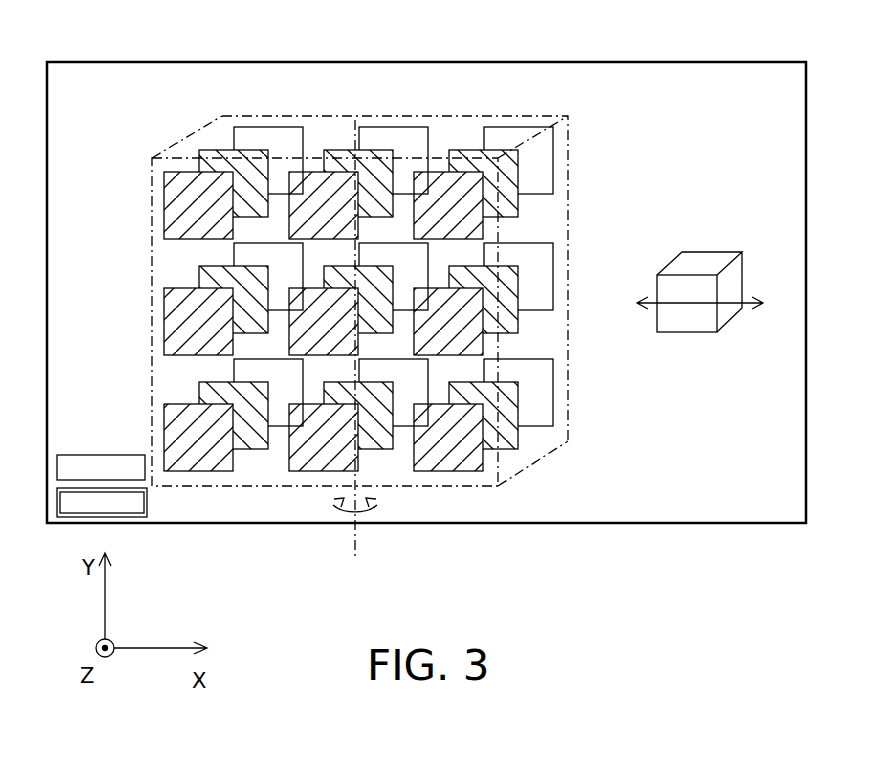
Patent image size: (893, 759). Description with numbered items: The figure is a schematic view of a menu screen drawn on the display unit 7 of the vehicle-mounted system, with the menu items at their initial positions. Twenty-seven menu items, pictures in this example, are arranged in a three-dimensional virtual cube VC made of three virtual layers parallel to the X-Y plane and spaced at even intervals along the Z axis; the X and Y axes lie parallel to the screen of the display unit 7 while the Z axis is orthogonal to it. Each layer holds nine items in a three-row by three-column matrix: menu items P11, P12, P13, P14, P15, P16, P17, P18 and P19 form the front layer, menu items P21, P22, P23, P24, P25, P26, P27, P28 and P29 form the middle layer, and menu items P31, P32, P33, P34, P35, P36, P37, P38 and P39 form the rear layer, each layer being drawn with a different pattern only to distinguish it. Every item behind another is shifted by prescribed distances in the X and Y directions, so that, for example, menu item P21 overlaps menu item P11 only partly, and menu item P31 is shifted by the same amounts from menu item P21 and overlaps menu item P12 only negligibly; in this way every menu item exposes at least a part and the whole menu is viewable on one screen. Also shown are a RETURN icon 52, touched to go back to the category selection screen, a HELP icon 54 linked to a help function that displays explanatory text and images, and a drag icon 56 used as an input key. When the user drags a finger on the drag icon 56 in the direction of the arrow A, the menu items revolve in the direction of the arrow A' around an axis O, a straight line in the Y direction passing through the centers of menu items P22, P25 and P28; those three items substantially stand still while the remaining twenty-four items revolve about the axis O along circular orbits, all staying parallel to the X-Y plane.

The display unit 7 is at (285, 62).
The three-dimensional virtual cube VC is at (569, 152).
The menu item P11 is at (163, 182).
The menu item P12 is at (311, 171).
The menu item P13 is at (483, 232).
The menu item P14 is at (164, 296).
The menu item P15 is at (289, 340).
The menu item P16 is at (483, 352).
The menu item P17 is at (164, 410).
The menu item P18 is at (289, 462).
The menu item P19 is at (485, 458).
The menu item P21 is at (199, 157).
The menu item P22 is at (342, 149).
The menu item P23 is at (518, 210).
The menu item P24 is at (199, 275).
The menu item P25 is at (360, 330).
The menu item P26 is at (520, 327).
The menu item P27 is at (199, 385).
The menu item P28 is at (385, 450).
The menu item P29 is at (518, 440).
The menu item P31 is at (233, 135).
The menu item P32 is at (390, 127).
The menu item P33 is at (553, 180).
The menu item P34 is at (233, 254).
The menu item P35 is at (451, 268).
The menu item P36 is at (553, 300).
The menu item P37 is at (233, 370).
The menu item P38 is at (400, 427).
The menu item P39 is at (553, 413).
The RETURN icon 52 is at (147, 508).
The HELP icon 54 is at (145, 477).
The drag icon 56 is at (688, 333).
The arrow A is at (702, 276).
The arrow A' is at (337, 340).
The axis O is at (355, 530).